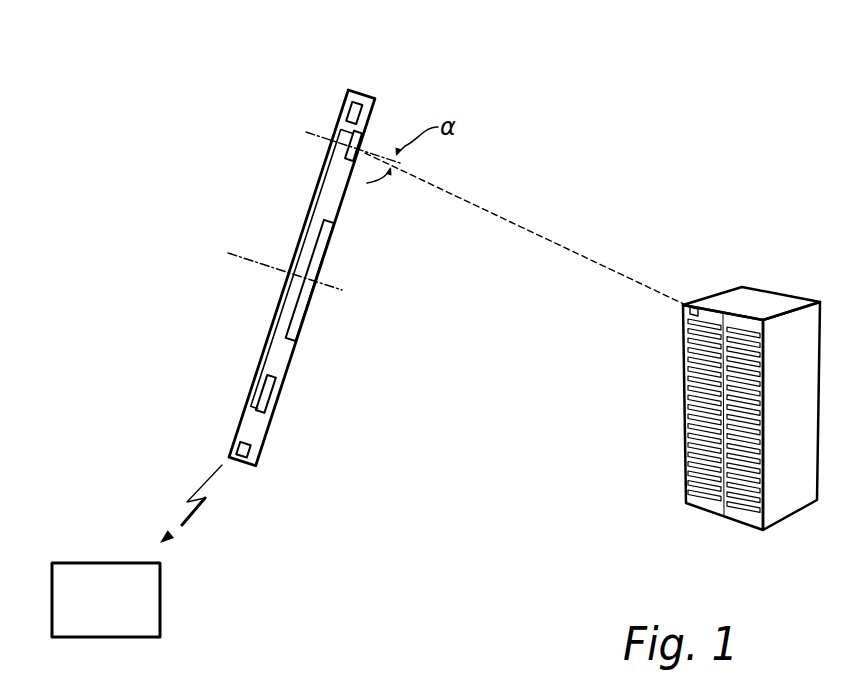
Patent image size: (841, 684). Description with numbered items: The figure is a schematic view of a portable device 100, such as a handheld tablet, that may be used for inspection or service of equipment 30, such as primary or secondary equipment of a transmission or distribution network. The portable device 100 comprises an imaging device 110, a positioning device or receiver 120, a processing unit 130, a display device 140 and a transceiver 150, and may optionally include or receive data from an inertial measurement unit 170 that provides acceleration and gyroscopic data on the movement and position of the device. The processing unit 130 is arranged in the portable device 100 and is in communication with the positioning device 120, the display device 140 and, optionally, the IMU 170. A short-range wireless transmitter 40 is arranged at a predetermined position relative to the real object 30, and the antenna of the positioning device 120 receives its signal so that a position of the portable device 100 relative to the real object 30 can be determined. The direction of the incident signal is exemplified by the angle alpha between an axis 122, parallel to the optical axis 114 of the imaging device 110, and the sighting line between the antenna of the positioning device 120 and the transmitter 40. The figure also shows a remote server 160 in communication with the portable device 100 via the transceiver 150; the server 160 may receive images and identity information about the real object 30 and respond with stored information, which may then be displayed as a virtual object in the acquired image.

The portable device 100 is at (366, 84).
The imaging device 110 is at (302, 310).
The optical axis 114 is at (339, 291).
The positioning device or receiver 120 is at (363, 136).
The axis 122 is at (377, 163).
The processing unit 130 is at (265, 393).
The display device 140 is at (277, 337).
The transceiver 150 is at (240, 463).
The server 160 is at (98, 562).
The inertial measurement unit 170 is at (345, 100).
The equipment 30 is at (773, 283).
The short-range wireless transmitter 40 is at (690, 307).